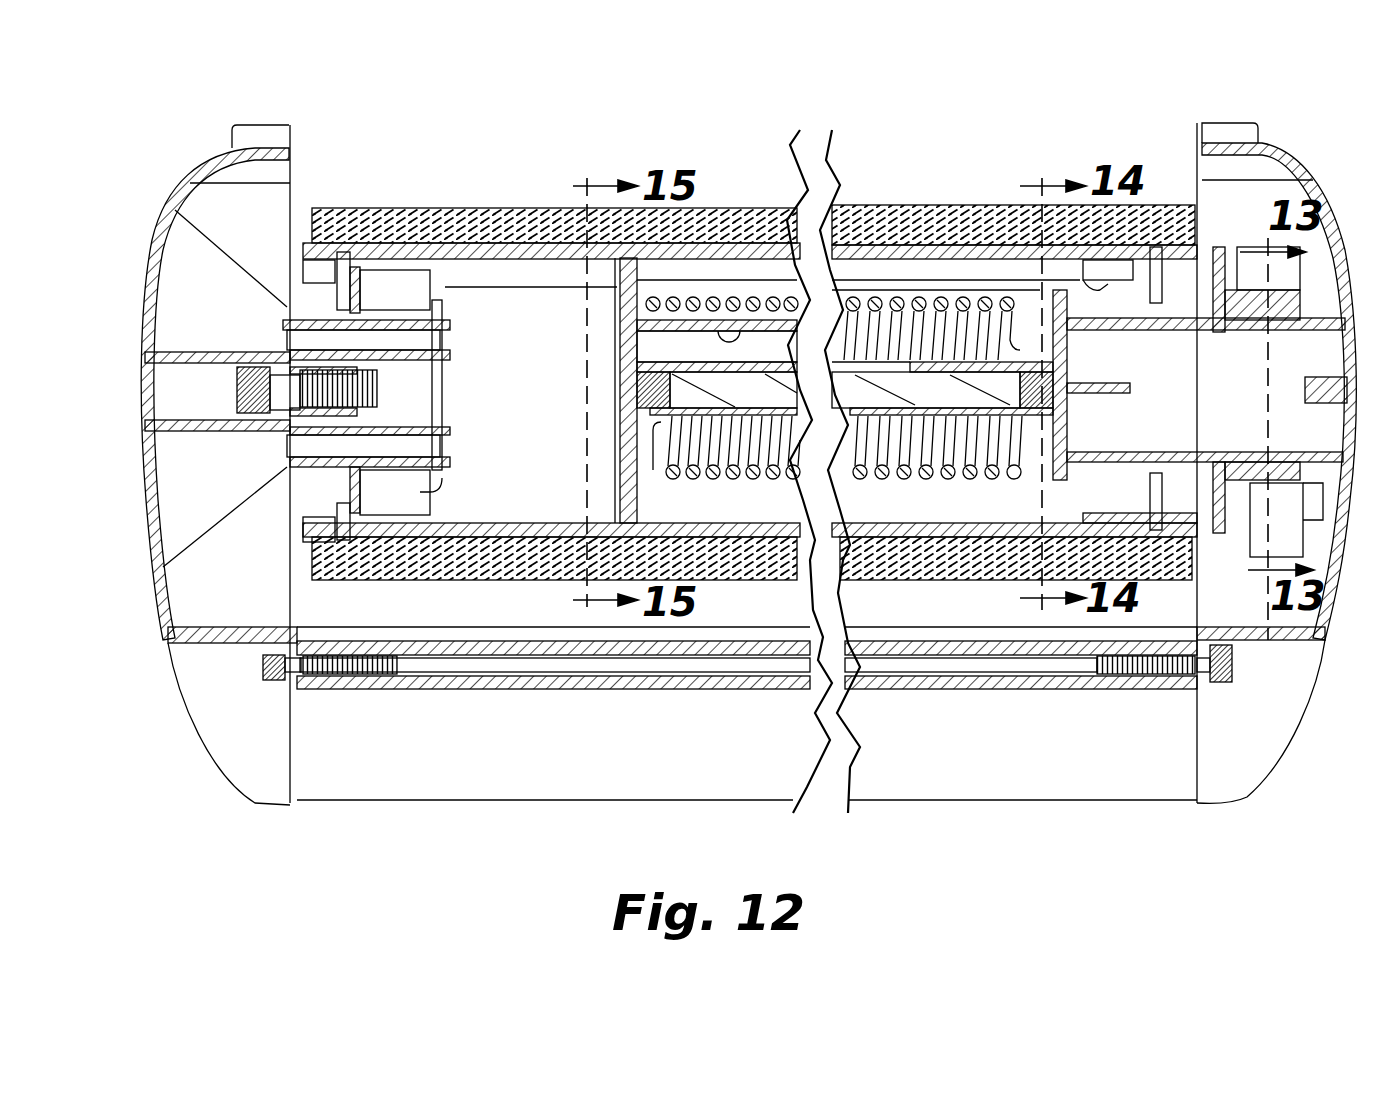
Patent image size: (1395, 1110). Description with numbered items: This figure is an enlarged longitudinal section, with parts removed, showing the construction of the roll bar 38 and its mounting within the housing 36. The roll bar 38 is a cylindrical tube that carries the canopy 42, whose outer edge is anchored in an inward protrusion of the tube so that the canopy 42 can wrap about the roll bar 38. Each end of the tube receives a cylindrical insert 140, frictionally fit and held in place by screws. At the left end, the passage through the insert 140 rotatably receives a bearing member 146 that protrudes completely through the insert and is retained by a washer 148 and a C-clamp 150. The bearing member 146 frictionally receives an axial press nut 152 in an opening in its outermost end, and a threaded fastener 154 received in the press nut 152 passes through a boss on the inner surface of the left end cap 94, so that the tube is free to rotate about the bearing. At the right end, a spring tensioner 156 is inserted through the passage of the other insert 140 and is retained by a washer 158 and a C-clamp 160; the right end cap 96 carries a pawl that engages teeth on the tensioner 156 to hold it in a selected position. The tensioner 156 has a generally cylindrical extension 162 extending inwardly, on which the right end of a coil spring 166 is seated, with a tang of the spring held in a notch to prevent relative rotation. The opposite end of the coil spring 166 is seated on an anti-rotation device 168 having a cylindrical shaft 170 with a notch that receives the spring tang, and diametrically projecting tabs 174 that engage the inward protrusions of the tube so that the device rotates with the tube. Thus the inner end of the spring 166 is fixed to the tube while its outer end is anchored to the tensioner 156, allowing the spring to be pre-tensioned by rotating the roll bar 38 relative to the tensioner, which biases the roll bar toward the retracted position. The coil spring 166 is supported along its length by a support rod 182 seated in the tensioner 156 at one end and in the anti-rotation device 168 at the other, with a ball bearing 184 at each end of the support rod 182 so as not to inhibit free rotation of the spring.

The housing 36 is at (466, 820).
The roll bar 38 is at (478, 300).
The canopy 42 is at (347, 210).
The end cap 94 is at (237, 733).
The end cap 96 is at (1227, 760).
The cylindrical insert 140 is at (438, 494).
The bearing member 146 is at (397, 420).
The washer 148 is at (447, 303).
The C-clamp 150 is at (453, 333).
The axial press nut 152 is at (283, 437).
The threaded fastener 154 is at (240, 357).
The spring tensioner 156 is at (1188, 300).
The washer 158 is at (1085, 320).
The C-clamp 160 is at (1073, 337).
The cylindrical extension 162 is at (1000, 390).
The coil spring 166 is at (725, 480).
The anti-rotation device 168 is at (578, 524).
The cylindrical shaft 170 is at (643, 280).
The diametrically projecting tabs 174 is at (703, 293).
The support rod 182 is at (897, 390).
The ball bearing 184 is at (637, 390).